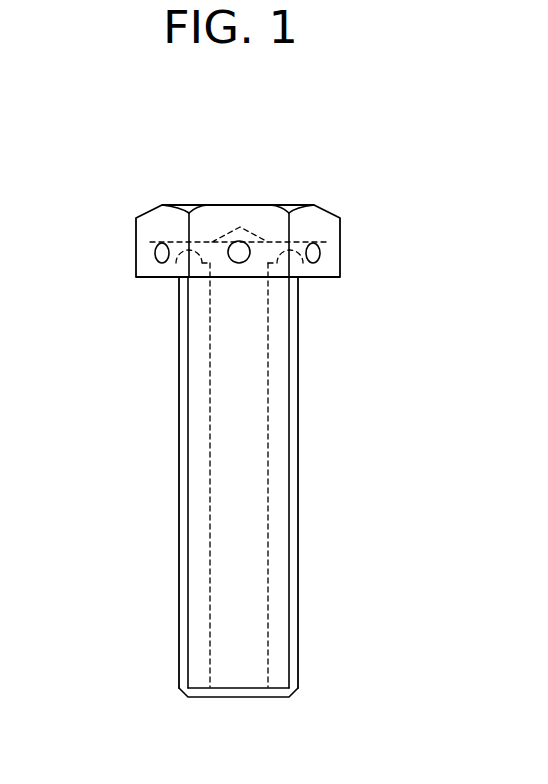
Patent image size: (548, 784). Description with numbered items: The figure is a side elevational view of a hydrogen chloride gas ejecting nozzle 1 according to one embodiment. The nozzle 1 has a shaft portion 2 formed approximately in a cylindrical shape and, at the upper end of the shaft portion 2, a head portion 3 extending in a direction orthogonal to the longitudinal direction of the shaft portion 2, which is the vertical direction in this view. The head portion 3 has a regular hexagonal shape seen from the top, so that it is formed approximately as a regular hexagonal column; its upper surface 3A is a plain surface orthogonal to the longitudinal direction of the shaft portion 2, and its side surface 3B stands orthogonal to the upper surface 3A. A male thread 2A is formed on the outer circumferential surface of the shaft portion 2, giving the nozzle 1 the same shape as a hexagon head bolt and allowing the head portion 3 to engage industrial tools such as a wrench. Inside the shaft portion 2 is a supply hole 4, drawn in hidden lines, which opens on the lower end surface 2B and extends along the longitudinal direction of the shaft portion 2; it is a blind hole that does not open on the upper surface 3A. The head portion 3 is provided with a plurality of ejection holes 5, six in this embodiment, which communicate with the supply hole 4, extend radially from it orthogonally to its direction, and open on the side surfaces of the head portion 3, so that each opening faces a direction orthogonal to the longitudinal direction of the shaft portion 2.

The hydrogen chloride gas ejecting nozzle 1 is at (412, 170).
The shaft portion 2 is at (317, 440).
The male thread 2A is at (299, 520).
The lower end surface 2B is at (260, 697).
The head portion 3 is at (115, 232).
The upper surface 3A is at (205, 207).
The side surface 3B is at (146, 261).
The supply hole 4 is at (209, 362).
The ejection holes 5 is at (176, 263).